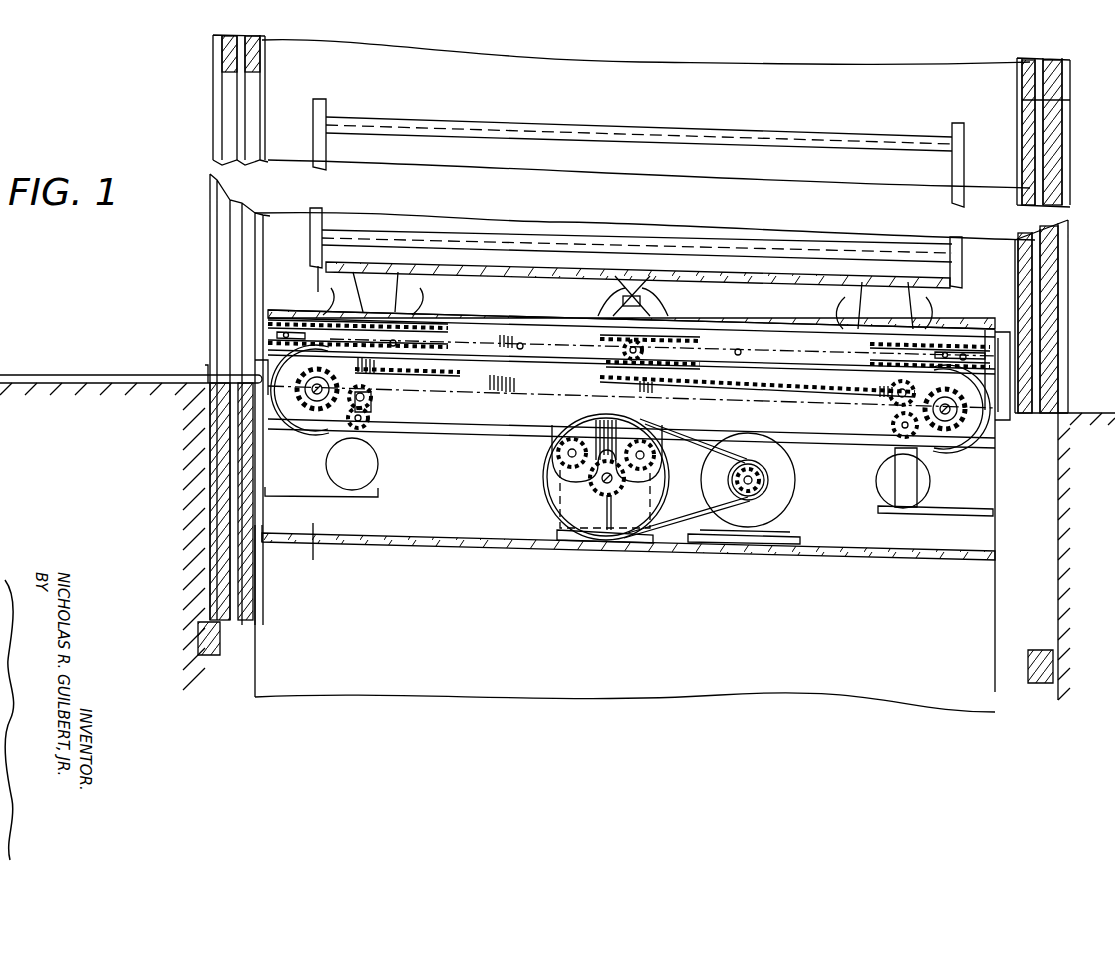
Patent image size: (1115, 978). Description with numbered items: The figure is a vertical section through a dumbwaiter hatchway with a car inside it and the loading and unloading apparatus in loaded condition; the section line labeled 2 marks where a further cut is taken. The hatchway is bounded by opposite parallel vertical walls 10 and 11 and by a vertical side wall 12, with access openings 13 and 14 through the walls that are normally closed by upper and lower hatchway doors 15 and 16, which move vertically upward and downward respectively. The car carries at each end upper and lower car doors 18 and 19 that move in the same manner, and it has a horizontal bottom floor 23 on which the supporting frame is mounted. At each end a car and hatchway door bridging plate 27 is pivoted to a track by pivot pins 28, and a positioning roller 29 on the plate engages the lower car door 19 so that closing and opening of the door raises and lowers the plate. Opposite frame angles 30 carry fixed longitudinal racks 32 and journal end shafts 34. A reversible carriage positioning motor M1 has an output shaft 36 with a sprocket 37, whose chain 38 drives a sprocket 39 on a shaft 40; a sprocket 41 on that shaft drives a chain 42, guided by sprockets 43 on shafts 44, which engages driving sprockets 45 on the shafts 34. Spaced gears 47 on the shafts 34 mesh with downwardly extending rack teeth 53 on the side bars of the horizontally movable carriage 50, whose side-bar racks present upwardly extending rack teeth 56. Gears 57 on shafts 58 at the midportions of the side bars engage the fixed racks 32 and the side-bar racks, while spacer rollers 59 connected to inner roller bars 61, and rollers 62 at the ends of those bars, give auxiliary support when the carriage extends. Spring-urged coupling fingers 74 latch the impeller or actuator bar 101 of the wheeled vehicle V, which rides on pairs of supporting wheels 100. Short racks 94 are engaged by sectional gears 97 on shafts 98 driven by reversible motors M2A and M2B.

The wheeled vehicle V is at (654, 108).
The section line 2- 2 is at (316, 278).
The vertical wall 10 is at (200, 670).
The vertical wall 11 is at (1045, 714).
The vertical side wall 12 is at (995, 685).
The access opening 13 is at (209, 272).
The access opening 14 is at (1062, 254).
The upper hatchway door 15 is at (224, 63).
The lower hatchway door 16 is at (214, 492).
The upper car door 18 is at (245, 52).
The lower car door 19 is at (240, 460).
The bottom floor 23 is at (453, 550).
The car and hatchway door bridging plate 27 is at (243, 380).
The pivot pin 28 is at (262, 381).
The positioning roller 29 is at (262, 372).
The frame angle 30 is at (953, 325).
The longitudinal rack 32 is at (428, 322).
The shaft 34 is at (297, 428).
The output shaft 36 is at (768, 463).
The sprocket 37 is at (745, 500).
The chain 38 is at (686, 530).
The sprocket 39 is at (551, 490).
The shaft 40 is at (613, 492).
The sprocket 41 is at (603, 485).
The chain 42 is at (445, 432).
The sprocket 43 is at (557, 466).
The shaft 44 is at (567, 453).
The driving sprocket 45 is at (294, 414).
The gear 47 is at (317, 398).
The carriage 50 is at (500, 393).
The rack teeth 53 is at (362, 393).
The rack teeth 56 is at (300, 322).
The gear 57 is at (644, 334).
The shaft 58 is at (666, 310).
The spacer roller 59 is at (397, 340).
The inner roller bar 61 is at (462, 338).
The roller 62 is at (325, 325).
The coupling finger 74 is at (612, 315).
The short rack 94 is at (877, 400).
The interrupted or sectional gear 97 is at (374, 406).
The shaft 98 is at (366, 425).
The supporting wheel 100 is at (445, 295).
The impeller or actuator bar 101 is at (645, 300).
The carriage positioning motor M1 is at (788, 492).
The reversible motor M2A is at (367, 469).
The reversible motor M2B is at (880, 492).